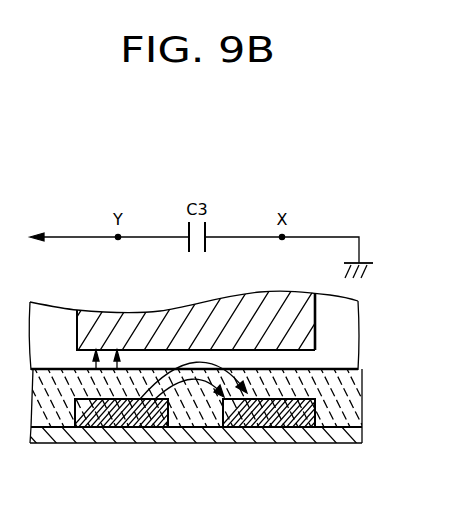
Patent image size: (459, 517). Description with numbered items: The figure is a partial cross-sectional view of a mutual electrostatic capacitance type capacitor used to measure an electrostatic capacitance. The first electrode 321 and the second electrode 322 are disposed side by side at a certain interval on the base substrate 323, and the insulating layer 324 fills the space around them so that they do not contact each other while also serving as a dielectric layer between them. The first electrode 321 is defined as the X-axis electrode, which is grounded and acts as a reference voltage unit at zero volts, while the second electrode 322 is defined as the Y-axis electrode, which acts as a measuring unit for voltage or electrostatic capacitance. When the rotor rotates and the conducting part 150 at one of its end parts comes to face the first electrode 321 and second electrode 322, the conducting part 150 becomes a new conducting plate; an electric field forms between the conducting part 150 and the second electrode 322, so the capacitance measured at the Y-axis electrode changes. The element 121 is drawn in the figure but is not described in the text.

The touch electrode 121 is at (300, 330).
The conducting part 150 is at (315, 357).
The first electrode 321 is at (262, 417).
The second electrode 322 is at (130, 417).
The base substrate 323 is at (50, 443).
The insulating layer 324 is at (340, 430).